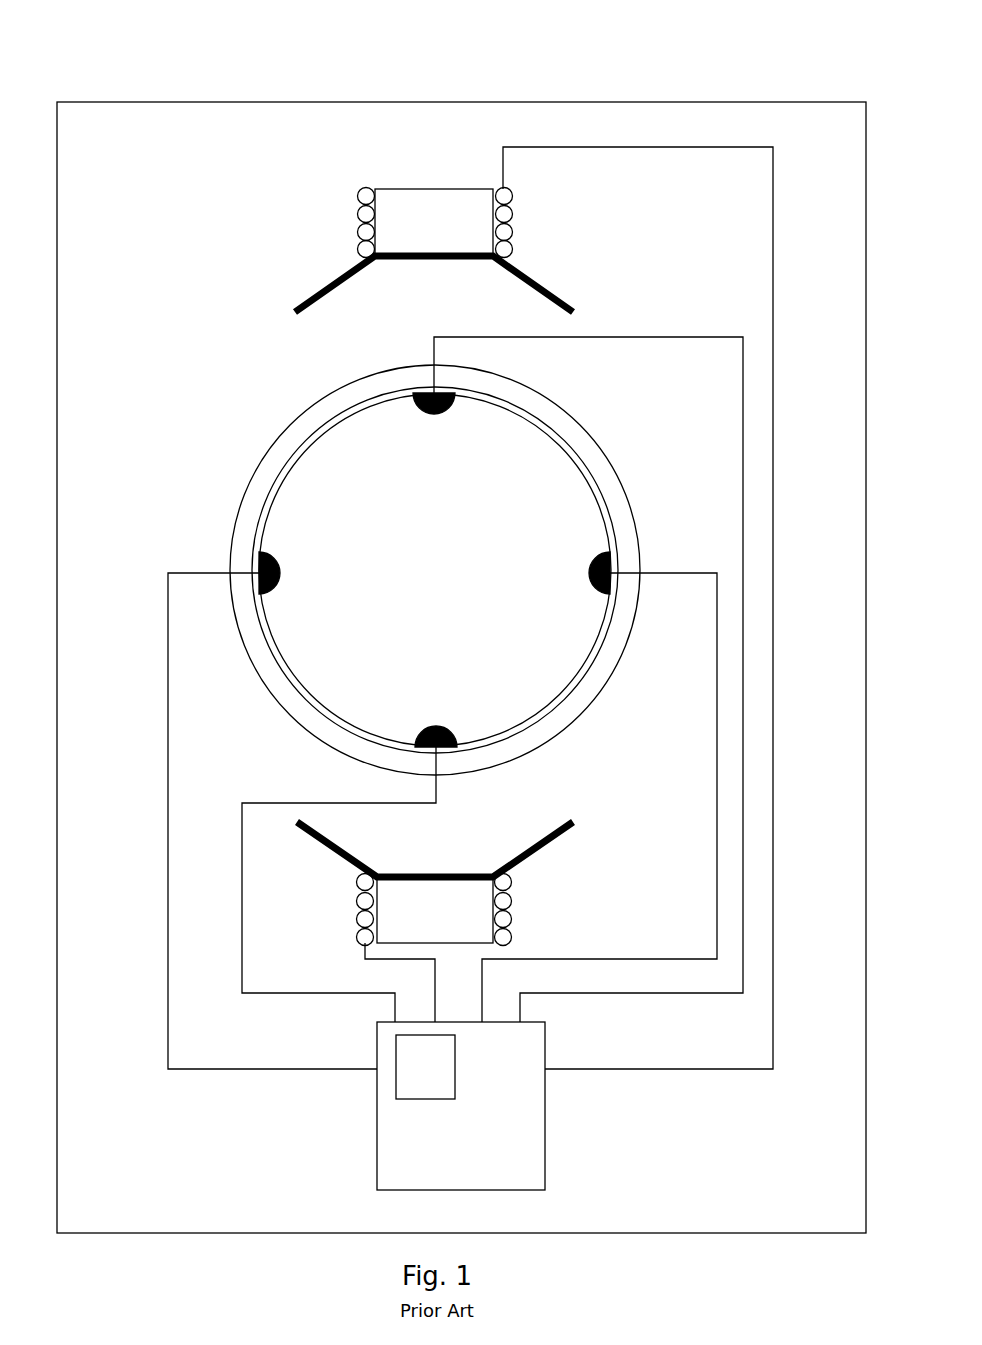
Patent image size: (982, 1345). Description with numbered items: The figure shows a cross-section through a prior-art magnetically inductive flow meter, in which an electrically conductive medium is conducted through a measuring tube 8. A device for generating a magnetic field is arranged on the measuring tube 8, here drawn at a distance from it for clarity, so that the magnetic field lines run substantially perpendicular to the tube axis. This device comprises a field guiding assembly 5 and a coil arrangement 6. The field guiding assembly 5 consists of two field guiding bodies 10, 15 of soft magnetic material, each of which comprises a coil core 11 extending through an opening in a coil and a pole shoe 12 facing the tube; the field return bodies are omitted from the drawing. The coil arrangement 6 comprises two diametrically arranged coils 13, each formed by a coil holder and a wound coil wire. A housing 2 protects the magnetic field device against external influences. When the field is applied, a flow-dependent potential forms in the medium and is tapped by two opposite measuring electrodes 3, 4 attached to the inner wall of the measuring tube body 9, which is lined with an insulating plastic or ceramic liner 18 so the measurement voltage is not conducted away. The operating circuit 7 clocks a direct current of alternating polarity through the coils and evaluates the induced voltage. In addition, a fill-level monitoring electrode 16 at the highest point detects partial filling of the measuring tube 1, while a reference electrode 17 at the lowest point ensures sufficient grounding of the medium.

The measuring tube 1 is at (158, 66).
The housing 2 is at (690, 102).
The first measuring electrode 3 is at (258, 573).
The second measuring electrode 4 is at (612, 573).
The field guiding assembly 5 is at (372, 156).
The coil arrangement 6 is at (340, 200).
The operating circuit 7 is at (461, 1106).
The measuring tube 8 is at (482, 517).
The measuring tube body 9 is at (302, 423).
The field guiding body 10 is at (480, 160).
The coil core 11 is at (422, 220).
The pole shoe 12 is at (310, 297).
The coil 13 is at (492, 888).
The field guiding body 15 is at (480, 854).
The fill-level monitoring electrode 16 is at (452, 412).
The reference electrode 17 is at (418, 745).
The liner 18 is at (595, 492).